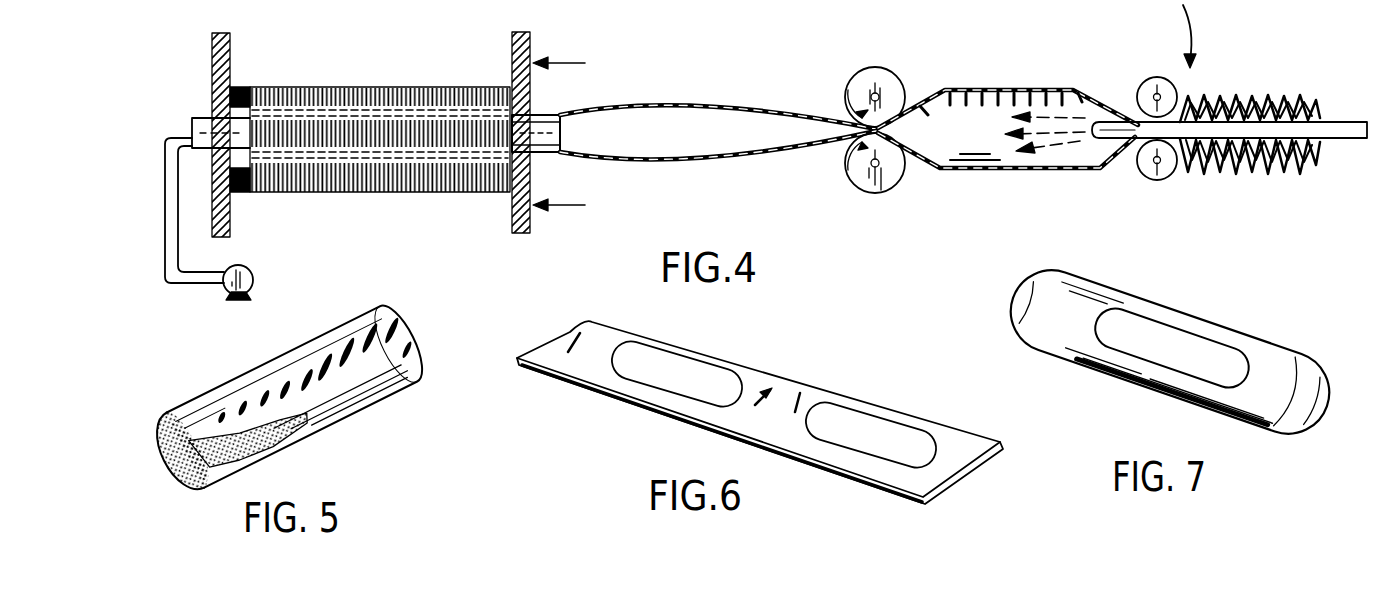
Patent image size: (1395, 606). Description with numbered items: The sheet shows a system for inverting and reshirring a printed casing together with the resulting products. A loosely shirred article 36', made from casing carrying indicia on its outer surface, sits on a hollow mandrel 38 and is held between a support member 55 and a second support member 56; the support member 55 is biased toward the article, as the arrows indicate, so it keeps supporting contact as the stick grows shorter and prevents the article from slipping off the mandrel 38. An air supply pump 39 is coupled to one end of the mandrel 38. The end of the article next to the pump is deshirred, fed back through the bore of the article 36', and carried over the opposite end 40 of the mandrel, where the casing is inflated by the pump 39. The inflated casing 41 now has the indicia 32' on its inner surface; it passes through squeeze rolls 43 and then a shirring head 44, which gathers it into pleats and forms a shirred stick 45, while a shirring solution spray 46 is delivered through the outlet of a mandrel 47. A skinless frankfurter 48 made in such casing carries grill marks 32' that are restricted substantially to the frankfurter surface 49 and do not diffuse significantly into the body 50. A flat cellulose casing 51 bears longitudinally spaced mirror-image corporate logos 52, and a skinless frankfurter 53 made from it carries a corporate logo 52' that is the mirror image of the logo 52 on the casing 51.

In FIG. 4, the indicia / grill marks 32' is at (838, 89).
In FIG. 5, the indicia / grill marks 32' is at (313, 376).
In FIG. 4, the loosely shirred article 36' is at (370, 117).
In FIG. 4, the hollow mandrel 38 is at (195, 118).
In FIG. 4, the air supply pump 39 is at (253, 275).
In FIG. 4, the opposite end of mandrel 40 is at (555, 125).
In FIG. 4, the inflated casing 41 is at (705, 108).
In FIG. 4, the squeeze rolls 43 is at (885, 192).
In FIG. 4, the shirring head 44 is at (1157, 77).
In FIG. 4, the shirred stick 45 is at (1245, 100).
In FIG. 4, the shirring solution spray 46 is at (1050, 145).
In FIG. 4, the mandrel 47 is at (1358, 140).
In FIG. 5, the skinless frankfurter 48 is at (385, 312).
In FIG. 5, the frankfurter surface 49 is at (270, 443).
In FIG. 5, the body of the frankfurter 50 is at (156, 437).
In FIG. 6, the flat cellulose casing 51 is at (768, 367).
In FIG. 6, the corporate logo 52 is at (773, 385).
In FIG. 7, the corporate logo on frankfurter 52' is at (1172, 363).
In FIG. 7, the skinless frankfurter 53 is at (1060, 363).
In FIG. 4, the support member 55 is at (531, 42).
In FIG. 4, the second support member 56 is at (230, 52).